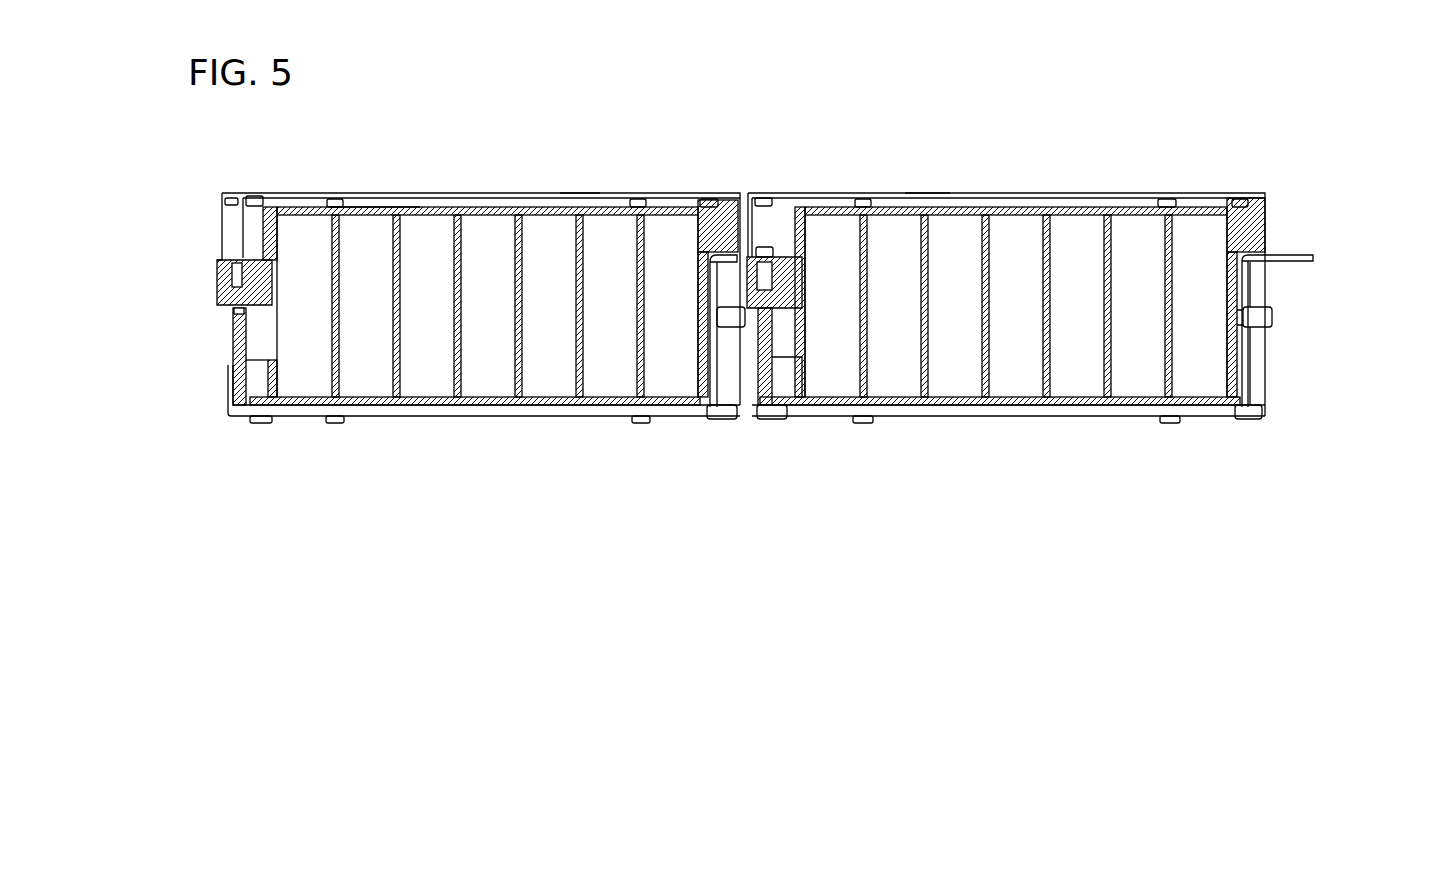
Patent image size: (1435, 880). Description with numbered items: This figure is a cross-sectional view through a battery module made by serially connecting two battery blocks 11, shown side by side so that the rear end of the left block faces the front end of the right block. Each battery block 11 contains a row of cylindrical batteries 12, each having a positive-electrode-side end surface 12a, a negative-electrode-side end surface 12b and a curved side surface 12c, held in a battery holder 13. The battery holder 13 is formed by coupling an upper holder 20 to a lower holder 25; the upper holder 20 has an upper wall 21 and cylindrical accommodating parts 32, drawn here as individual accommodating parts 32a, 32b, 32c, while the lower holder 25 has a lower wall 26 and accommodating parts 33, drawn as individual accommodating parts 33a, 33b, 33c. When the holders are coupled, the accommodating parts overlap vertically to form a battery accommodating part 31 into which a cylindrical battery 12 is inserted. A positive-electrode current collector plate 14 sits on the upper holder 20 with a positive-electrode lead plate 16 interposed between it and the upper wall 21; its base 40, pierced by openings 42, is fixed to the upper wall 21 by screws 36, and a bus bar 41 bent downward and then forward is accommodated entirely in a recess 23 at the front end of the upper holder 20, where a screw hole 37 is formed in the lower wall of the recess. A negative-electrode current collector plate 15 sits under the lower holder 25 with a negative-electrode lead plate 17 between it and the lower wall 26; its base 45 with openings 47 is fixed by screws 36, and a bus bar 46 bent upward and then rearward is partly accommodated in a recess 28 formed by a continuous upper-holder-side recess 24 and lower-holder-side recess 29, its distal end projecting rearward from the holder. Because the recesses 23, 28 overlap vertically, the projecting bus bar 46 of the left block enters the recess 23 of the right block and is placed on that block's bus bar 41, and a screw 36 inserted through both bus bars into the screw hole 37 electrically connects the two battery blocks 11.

The battery block 11 is at (288, 414).
The cylindrical battery 12 is at (1227, 207).
The positive-electrode-side end surface 12a is at (1210, 240).
The negative-electrode-side end surface 12b is at (1195, 410).
The side surface 12c is at (1163, 280).
The battery holder 13 is at (150, 275).
The positive-electrode current collector plate 14 is at (582, 192).
The negative-electrode current collector plate 15 is at (577, 406).
The positive-electrode lead plate 16 is at (627, 206).
The negative-electrode lead plate 17 is at (618, 406).
The upper holder 20 is at (217, 291).
The upper wall 21 is at (460, 214).
The recess 23 is at (232, 197).
The upper-holder-side recess 24 is at (1262, 292).
The lower holder 25 is at (233, 360).
The lower wall 26 is at (458, 407).
The recess 28 is at (720, 416).
The lower-holder-side recess 29 is at (1262, 362).
The battery accommodating part 31 is at (1031, 325).
The accommodating part 32 is at (1128, 125).
The first partition wall 32a is at (1040, 235).
The second partition wall 32b is at (1050, 214).
The third partition wall 32c is at (1090, 214).
The accommodating part 33 is at (1130, 477).
The first bottom portion 33a is at (1040, 380).
The second bottom portion 33b is at (1058, 406).
The third bottom portion 33c is at (1088, 406).
The screw 36 is at (708, 208).
The screw hole 37 is at (800, 270).
The base 40 is at (335, 199).
The bus bar 41 is at (257, 196).
The opening 42 is at (385, 206).
The base 45 is at (336, 418).
The bus bar 46 is at (738, 407).
The opening 47 is at (384, 406).